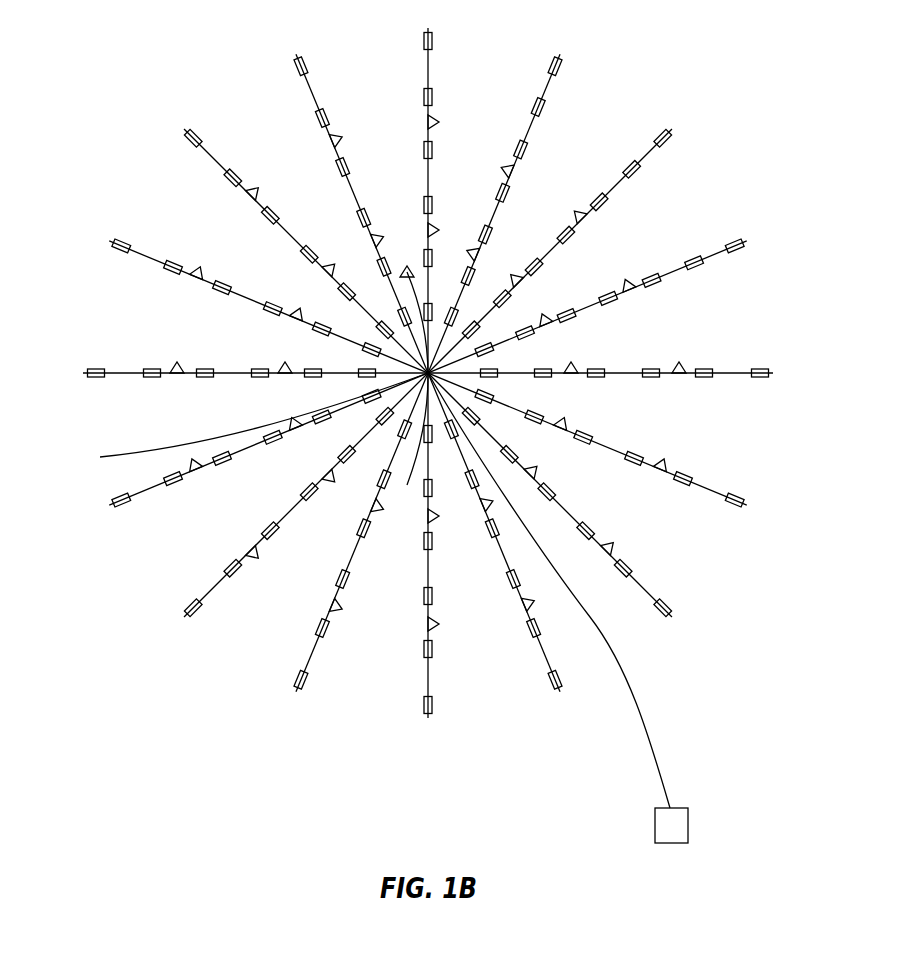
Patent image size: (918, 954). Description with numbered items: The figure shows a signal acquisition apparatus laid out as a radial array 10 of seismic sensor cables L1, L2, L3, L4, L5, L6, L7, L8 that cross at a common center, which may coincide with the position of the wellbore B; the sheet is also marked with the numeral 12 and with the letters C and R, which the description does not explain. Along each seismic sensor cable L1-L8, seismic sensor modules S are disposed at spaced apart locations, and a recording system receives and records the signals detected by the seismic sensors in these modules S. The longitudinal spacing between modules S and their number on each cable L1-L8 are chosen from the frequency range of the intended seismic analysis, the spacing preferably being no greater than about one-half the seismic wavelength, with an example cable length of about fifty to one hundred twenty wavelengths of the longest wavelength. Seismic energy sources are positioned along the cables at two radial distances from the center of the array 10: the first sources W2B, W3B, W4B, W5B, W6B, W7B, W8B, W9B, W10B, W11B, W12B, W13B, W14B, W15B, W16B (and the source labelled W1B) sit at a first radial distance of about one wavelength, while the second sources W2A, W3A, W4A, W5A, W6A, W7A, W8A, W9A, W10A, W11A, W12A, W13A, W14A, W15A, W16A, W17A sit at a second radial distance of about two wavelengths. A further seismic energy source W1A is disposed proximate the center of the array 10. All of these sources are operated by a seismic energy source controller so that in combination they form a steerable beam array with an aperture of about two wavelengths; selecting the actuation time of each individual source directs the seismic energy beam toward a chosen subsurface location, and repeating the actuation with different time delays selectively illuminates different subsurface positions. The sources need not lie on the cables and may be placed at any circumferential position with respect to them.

The array 10 is at (107, 781).
The sensor array 12 is at (846, 714).
The seismic sensor module S is at (429, 30).
The seismic sensor cable L1 is at (213, 590).
The seismic sensor cable L2 is at (312, 657).
The seismic sensor cable L3 is at (430, 645).
The seismic sensor cable L4 is at (548, 653).
The seismic sensor cable L5 is at (641, 587).
The seismic sensor cable L6 is at (710, 488).
The seismic sensor cable L7 is at (728, 372).
The seismic sensor cable L8 is at (714, 265).
The wellbore B is at (250, 424).
The control line C is at (412, 390).
The reader R is at (690, 828).
The seismic energy source W1A is at (405, 267).
The wire element 1B W1B is at (322, 475).
The second seismic energy source W2A is at (256, 553).
The first seismic energy source W2B is at (367, 505).
The second seismic energy source W3A is at (336, 603).
The first seismic energy source W3B is at (422, 514).
The second seismic energy source W4A is at (428, 632).
The first seismic energy source W4B is at (480, 508).
The second seismic energy source W5A is at (524, 612).
The first seismic energy source W5B is at (534, 473).
The second seismic energy source W6A is at (609, 549).
The first seismic energy source W6B is at (563, 424).
The second seismic energy source W7A is at (662, 475).
The first seismic energy source W7B is at (573, 365).
The second seismic energy source W8A is at (680, 382).
The first seismic energy source W8B is at (547, 322).
The second seismic energy source W9A is at (630, 297).
The first seismic energy source W9B is at (517, 280).
The second seismic energy source W10A is at (590, 222).
The first seismic energy source W10B is at (470, 256).
The second seismic energy source W11A is at (520, 177).
The first seismic energy source W11B is at (435, 228).
The second seismic energy source W12A is at (420, 122).
The first seismic energy source W12B is at (366, 245).
The second seismic energy source W13A is at (324, 146).
The first seismic energy source W13B is at (320, 281).
The second seismic energy source W14A is at (243, 198).
The first seismic energy source W14B is at (292, 326).
The second seismic energy source W15A is at (193, 284).
The first seismic energy source W15B is at (282, 381).
The second seismic energy source W16A is at (174, 381).
The first seismic energy source W16B is at (297, 434).
The second seismic energy source W17A is at (193, 470).